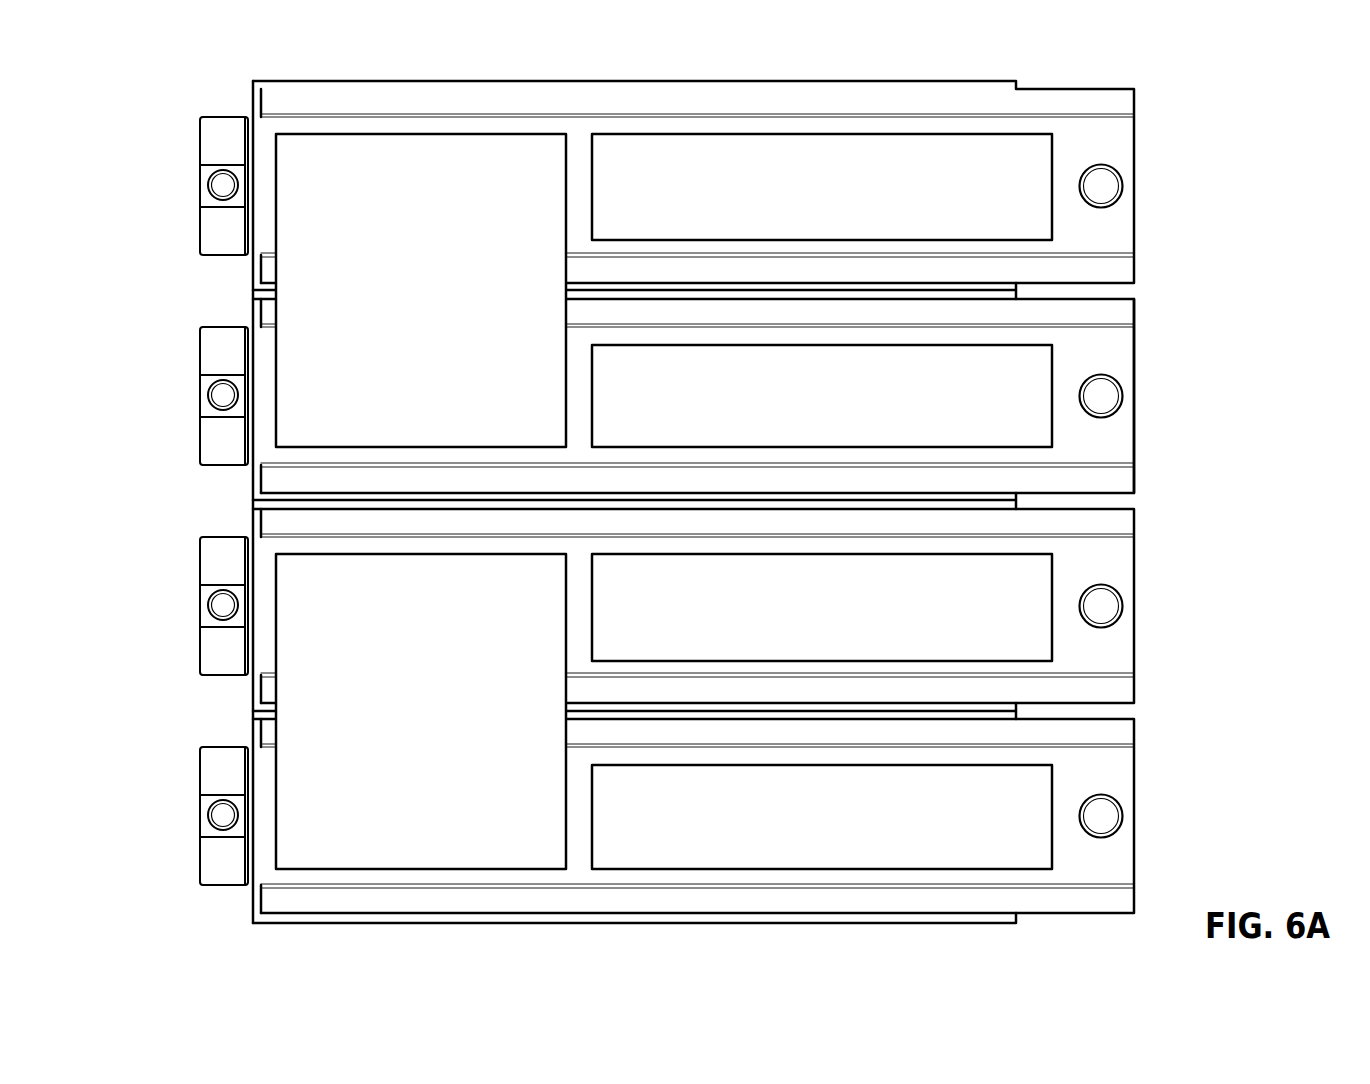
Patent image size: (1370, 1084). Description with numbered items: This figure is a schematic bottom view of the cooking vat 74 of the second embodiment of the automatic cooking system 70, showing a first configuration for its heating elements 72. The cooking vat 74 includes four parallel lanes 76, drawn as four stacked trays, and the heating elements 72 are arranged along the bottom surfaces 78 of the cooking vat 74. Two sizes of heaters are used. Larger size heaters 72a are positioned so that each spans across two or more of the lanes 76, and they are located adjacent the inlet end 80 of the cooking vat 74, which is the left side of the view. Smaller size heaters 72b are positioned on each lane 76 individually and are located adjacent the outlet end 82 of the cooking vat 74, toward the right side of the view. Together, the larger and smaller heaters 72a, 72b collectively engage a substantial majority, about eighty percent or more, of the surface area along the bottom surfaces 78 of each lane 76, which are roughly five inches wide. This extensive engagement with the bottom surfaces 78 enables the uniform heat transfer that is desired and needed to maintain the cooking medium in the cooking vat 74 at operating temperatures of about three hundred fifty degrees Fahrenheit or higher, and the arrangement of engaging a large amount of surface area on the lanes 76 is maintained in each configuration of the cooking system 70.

The cooking system 70 is at (709, 504).
The heating elements 72 is at (664, 504).
The larger size heaters 72a is at (398, 309).
The smaller size heaters 72b is at (819, 202).
The cooking vat 74 is at (1097, 89).
The lanes 76 is at (1008, 317).
The bottom surfaces 78 is at (1099, 227).
The inlet end 80 is at (251, 296).
The outlet end 82 is at (1137, 352).